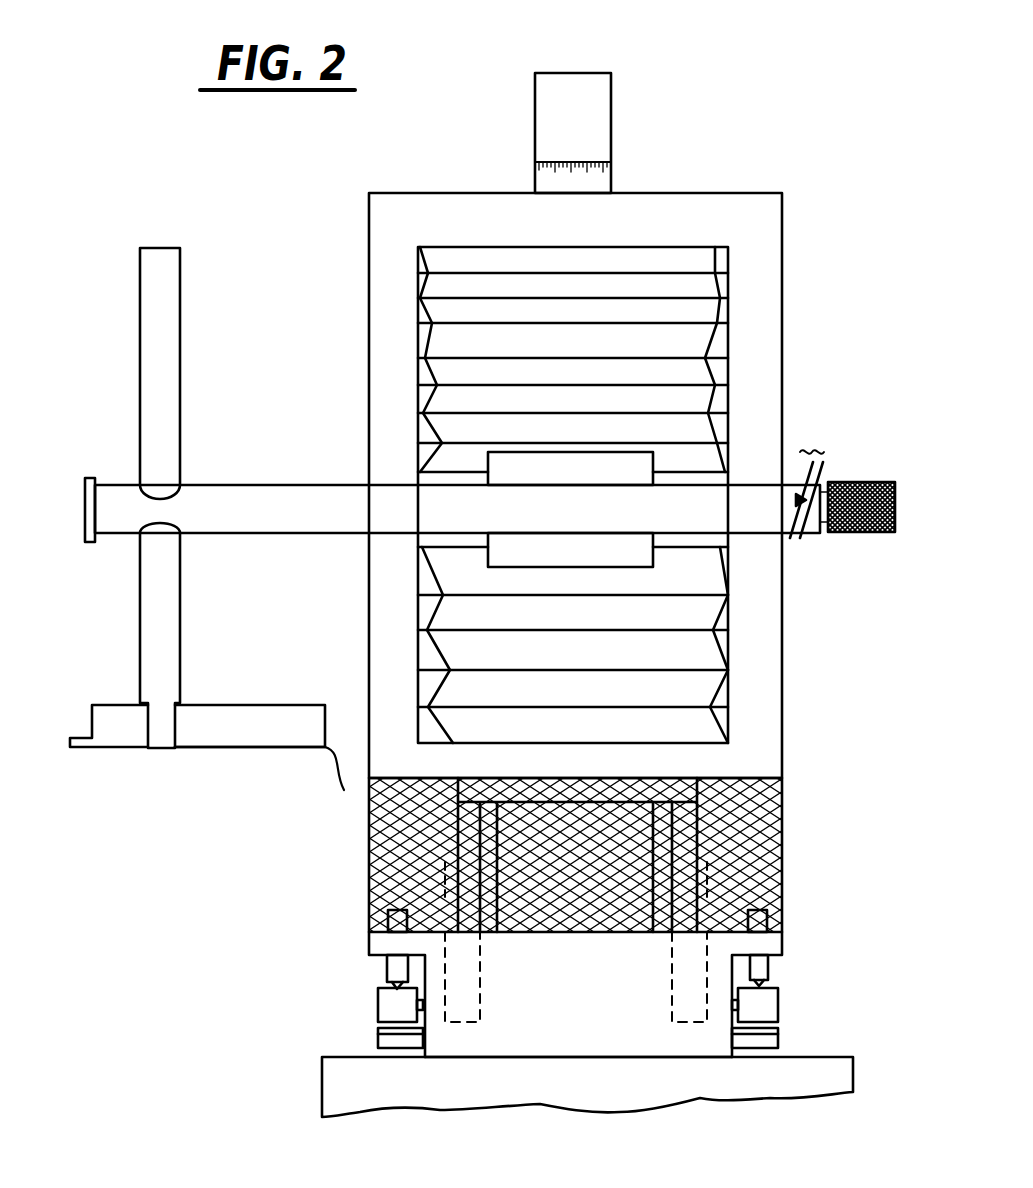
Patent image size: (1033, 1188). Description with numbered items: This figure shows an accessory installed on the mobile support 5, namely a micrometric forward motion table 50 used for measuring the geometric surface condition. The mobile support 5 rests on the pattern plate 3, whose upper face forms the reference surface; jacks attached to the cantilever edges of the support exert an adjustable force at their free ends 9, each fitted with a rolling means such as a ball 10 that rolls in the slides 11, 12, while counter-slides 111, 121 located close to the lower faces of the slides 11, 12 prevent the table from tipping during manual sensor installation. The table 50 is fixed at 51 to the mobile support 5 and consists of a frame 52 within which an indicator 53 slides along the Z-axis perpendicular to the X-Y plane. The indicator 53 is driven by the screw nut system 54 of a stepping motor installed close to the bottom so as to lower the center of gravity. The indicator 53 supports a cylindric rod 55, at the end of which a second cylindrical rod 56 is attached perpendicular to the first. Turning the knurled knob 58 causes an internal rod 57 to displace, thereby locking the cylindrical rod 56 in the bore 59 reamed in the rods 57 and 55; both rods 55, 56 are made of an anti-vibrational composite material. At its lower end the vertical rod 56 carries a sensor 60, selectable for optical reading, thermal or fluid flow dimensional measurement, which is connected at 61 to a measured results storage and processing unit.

The micrometric forward motion table 50 is at (666, 160).
The frame 52 is at (369, 246).
The screw nut system 54 is at (535, 118).
The cylindric rod 55 is at (276, 492).
The indicator 53 is at (452, 542).
The second cylindrical rod 56 is at (161, 343).
The bore 59 is at (182, 536).
The sensor 60 is at (238, 712).
The sensor connection 61 is at (325, 747).
The fixing point of table 51 is at (442, 888).
The free end of jack 9 is at (782, 910).
The ball 10 is at (763, 975).
The slide 11 is at (388, 1005).
The counter-slide 111 is at (388, 1040).
The slide 12 is at (765, 1010).
The counter-slide 121 is at (768, 1040).
The pattern plate 3 is at (322, 1076).
The mobile support 5 is at (648, 1046).
The internal rod 57 is at (826, 533).
The knurled knob 58 is at (852, 482).